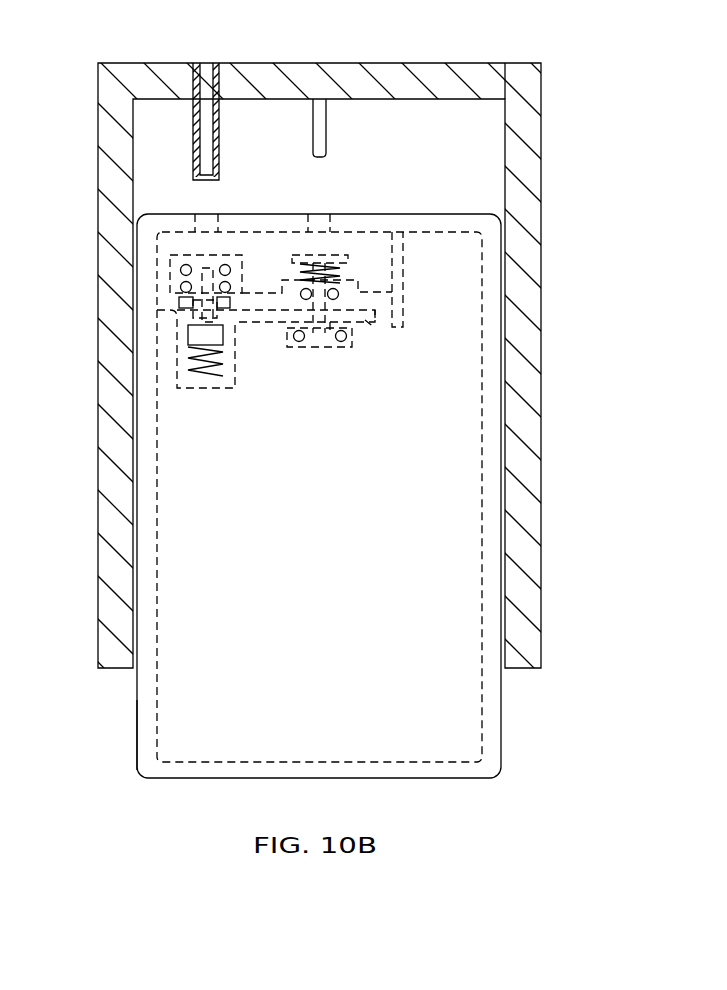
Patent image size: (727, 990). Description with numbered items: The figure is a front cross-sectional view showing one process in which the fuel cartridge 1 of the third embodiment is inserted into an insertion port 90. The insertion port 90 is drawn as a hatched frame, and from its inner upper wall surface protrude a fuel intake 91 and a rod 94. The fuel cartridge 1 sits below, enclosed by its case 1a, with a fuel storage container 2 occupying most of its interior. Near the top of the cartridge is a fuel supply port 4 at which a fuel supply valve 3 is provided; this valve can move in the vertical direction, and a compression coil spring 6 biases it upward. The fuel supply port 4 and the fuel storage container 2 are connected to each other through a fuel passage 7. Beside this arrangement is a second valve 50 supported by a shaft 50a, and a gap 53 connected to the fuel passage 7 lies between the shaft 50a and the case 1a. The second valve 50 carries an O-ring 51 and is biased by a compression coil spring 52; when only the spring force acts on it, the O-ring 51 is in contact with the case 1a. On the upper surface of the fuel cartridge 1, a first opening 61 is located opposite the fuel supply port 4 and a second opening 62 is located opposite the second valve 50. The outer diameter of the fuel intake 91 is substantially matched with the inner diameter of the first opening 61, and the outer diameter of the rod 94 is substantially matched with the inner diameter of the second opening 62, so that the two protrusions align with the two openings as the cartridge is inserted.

The fuel cartridge 1 is at (502, 728).
The case 1a is at (147, 736).
The fuel storage container 2 is at (175, 686).
The fuel supply valve 3 is at (165, 280).
The fuel supply port 4 is at (170, 255).
The compression coil spring 6 is at (190, 362).
The fuel passage 7 is at (260, 315).
The second valve 50 is at (309, 350).
The shaft 50a is at (372, 330).
The O-ring 51 is at (340, 342).
The compression coil spring 52 is at (322, 272).
The gap 53 is at (336, 350).
The first opening 61 is at (190, 221).
The second opening 62 is at (333, 222).
The insertion port 90 is at (92, 78).
The fuel intake 91 is at (219, 102).
The rod 94 is at (326, 130).